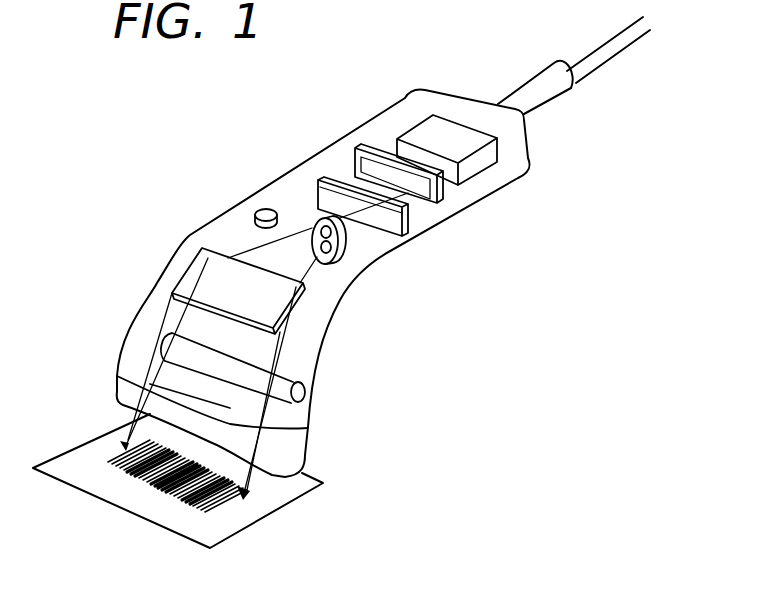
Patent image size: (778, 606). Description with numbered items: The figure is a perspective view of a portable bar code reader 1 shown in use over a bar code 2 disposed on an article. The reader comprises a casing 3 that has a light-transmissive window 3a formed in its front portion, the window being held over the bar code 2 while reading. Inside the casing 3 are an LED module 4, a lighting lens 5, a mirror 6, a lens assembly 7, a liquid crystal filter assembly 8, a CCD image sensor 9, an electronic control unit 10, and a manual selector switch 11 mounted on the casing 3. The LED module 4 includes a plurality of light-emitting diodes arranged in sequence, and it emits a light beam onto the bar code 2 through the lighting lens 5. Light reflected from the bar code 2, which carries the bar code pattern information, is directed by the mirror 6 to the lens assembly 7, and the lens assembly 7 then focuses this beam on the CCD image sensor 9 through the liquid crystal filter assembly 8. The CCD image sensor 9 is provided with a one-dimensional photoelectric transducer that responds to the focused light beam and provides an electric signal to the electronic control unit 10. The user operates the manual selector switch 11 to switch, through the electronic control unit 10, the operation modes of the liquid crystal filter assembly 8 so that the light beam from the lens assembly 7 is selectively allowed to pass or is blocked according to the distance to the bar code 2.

The bar code reader 1 is at (354, 282).
The bar code 2 is at (93, 442).
The casing 3 is at (458, 111).
The light-transmissive window 3a is at (129, 389).
The LED module 4 is at (168, 320).
The lighting lens 5 is at (163, 356).
The mirror 6 is at (200, 266).
The lens assembly 7 is at (330, 218).
The liquid crystal filter assembly 8 is at (313, 226).
The CCD image sensor 9 is at (366, 145).
The electronic control unit 10 is at (431, 130).
The manual selector switch 11 is at (258, 209).